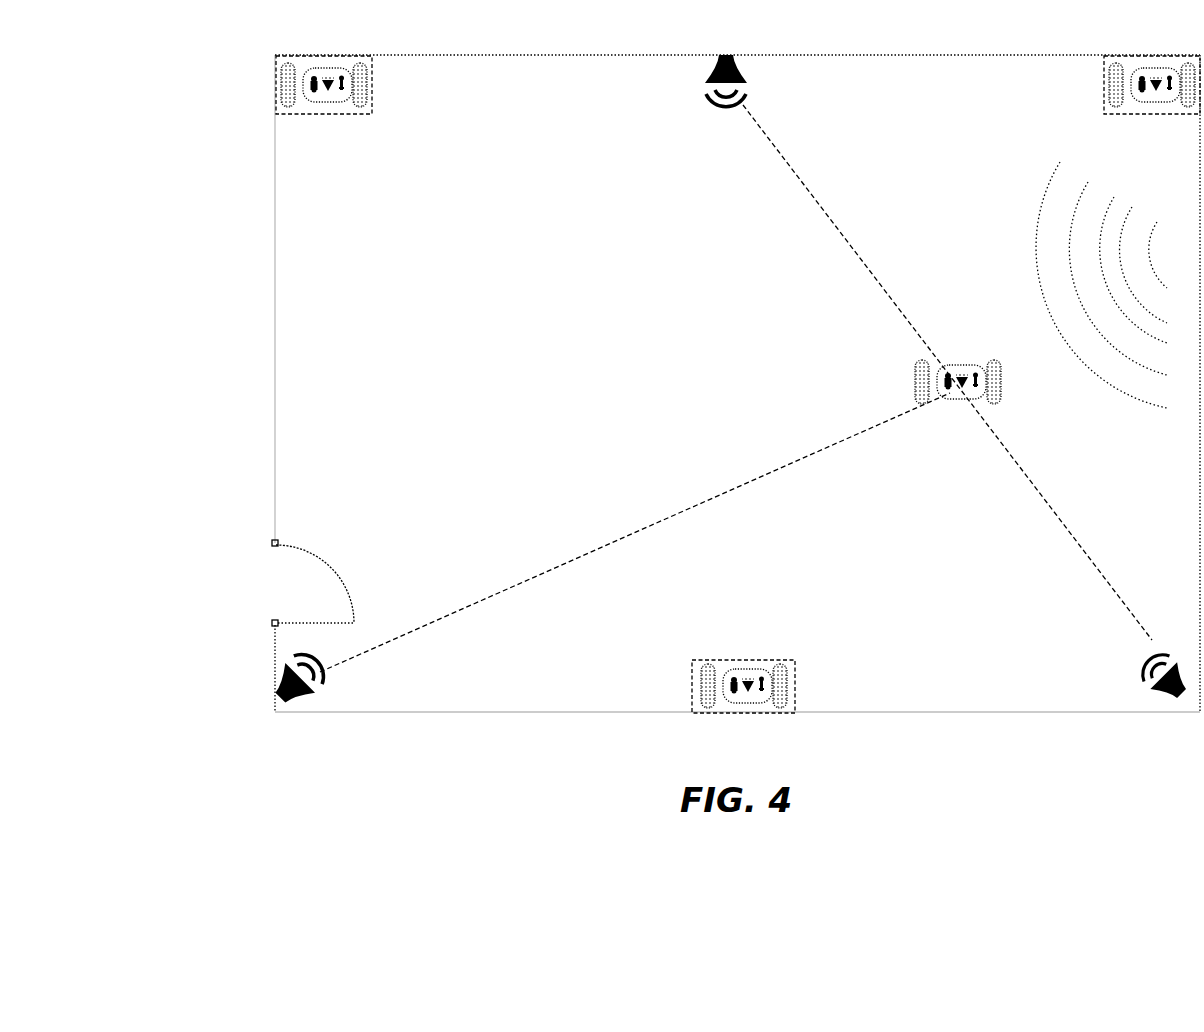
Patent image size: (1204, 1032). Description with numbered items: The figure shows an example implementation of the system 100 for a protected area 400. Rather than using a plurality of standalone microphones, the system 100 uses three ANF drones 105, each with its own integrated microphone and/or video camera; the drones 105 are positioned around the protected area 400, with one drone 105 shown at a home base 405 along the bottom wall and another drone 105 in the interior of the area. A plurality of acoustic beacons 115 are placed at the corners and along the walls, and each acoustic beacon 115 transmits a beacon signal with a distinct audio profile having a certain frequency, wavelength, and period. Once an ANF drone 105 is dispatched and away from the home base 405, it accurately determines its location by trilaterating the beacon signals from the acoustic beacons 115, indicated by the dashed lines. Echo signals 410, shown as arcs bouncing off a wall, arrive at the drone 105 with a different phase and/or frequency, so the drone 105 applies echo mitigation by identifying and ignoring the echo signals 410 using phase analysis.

The system 100 is at (214, 78).
The ANF drone 105 is at (316, 115).
The acoustic beacon 115 is at (710, 82).
The protected area 400 is at (274, 268).
The home base 405 is at (692, 660).
The echo signals 410 is at (1053, 170).